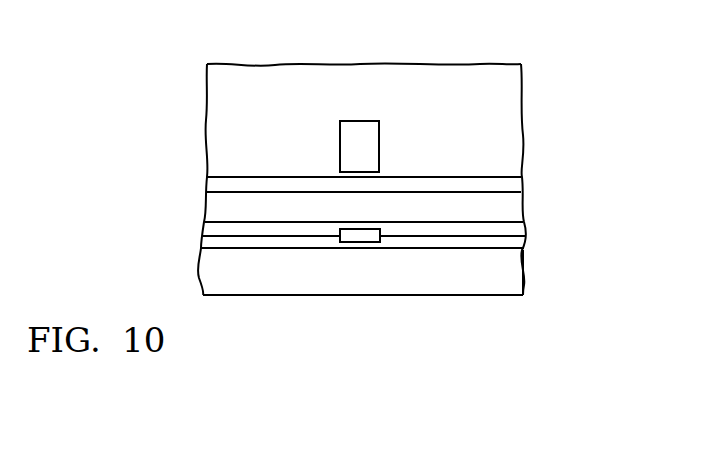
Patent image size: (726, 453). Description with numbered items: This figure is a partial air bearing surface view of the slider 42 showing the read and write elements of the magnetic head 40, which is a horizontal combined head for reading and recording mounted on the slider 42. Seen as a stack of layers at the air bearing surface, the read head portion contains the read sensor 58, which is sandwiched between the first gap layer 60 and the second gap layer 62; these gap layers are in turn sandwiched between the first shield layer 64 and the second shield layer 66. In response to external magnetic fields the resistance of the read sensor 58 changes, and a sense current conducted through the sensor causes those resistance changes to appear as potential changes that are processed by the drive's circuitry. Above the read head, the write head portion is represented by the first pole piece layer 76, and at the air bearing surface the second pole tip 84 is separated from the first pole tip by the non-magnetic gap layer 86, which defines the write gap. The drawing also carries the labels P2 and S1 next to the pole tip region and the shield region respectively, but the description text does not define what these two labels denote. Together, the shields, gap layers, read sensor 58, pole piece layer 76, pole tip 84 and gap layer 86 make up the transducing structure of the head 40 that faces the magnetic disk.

The magnetic head 40 is at (552, 78).
The slider 42 is at (213, 92).
The read sensor 58 is at (363, 236).
The first gap layer 60 is at (239, 248).
The second gap layer 62 is at (485, 227).
The first shield layer 64 is at (507, 273).
The second shield layer 66 is at (212, 212).
The first pole piece layer 76 is at (212, 185).
The second pole tip 84 is at (367, 130).
The non-magnetic gap layer 86 is at (352, 167).
The pattern P2 is at (363, 147).
The surface S1 is at (440, 274).